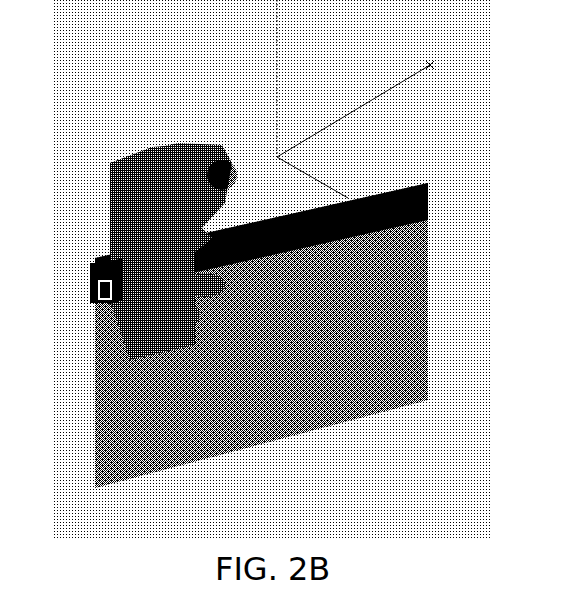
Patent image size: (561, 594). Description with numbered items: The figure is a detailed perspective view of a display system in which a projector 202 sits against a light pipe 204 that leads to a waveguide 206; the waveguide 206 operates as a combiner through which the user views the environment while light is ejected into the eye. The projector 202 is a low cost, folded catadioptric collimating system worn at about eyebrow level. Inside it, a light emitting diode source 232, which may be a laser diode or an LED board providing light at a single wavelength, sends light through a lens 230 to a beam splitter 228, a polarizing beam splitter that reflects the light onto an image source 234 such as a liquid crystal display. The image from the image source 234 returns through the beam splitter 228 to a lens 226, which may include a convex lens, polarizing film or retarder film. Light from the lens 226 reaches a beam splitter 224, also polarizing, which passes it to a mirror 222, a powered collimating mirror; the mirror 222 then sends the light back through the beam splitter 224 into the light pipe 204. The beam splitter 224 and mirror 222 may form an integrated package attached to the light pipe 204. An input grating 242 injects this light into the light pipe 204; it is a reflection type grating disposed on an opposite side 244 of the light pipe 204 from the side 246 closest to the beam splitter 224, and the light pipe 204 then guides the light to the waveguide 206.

The projector 202 is at (145, 211).
The light pipe 204 is at (383, 190).
The waveguide 206 is at (428, 310).
The mirror 222 is at (182, 320).
The beam splitter 224 is at (203, 282).
The lens 226 is at (190, 240).
The beam splitter 228 is at (110, 178).
The lens 230 is at (185, 148).
The light emitting diode source 232 is at (230, 158).
The image source 234 is at (145, 160).
The input grating 242 is at (92, 300).
The opposite side 244 is at (92, 285).
The side 246 is at (108, 265).